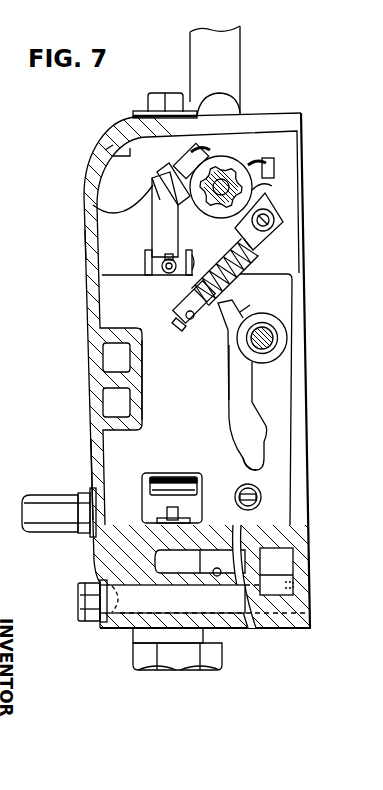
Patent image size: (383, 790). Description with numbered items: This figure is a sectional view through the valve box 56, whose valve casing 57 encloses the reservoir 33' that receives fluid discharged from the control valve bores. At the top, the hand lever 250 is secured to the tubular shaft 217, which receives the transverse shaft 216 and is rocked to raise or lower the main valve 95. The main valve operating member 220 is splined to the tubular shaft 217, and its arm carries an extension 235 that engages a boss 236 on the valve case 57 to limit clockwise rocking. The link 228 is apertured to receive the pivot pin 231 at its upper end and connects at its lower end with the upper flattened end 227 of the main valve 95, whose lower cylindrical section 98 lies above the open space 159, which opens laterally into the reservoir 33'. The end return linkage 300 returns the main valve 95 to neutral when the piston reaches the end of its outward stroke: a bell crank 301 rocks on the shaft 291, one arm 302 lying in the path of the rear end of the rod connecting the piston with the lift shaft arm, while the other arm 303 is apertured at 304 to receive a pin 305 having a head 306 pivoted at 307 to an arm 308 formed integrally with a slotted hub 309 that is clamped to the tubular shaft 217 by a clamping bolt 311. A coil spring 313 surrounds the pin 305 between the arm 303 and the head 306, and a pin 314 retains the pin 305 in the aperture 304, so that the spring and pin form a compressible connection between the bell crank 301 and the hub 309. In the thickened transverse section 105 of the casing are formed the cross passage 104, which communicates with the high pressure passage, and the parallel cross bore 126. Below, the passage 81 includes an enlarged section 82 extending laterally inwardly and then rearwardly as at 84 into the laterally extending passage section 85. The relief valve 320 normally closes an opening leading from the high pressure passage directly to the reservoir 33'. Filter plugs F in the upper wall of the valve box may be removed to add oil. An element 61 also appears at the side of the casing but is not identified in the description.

The hand lever 250 is at (242, 47).
The filter plug F is at (152, 100).
The boss 236 is at (112, 150).
The slotted hub 309 is at (190, 158).
The tubular shaft 217 is at (232, 167).
The transverse shaft 216 is at (218, 203).
The main valve operating member 220 is at (274, 168).
The arm 308 is at (255, 192).
The pivot 307 is at (276, 212).
The head 306 is at (282, 230).
The end return linkage 300 is at (270, 258).
The pivot pin 231 is at (158, 180).
The extension 235 is at (105, 206).
The link 228 is at (165, 230).
The clamping bolt 311 is at (184, 204).
The main valve 95 is at (143, 253).
The upper flattened end 227 is at (158, 268).
The valve box 56 is at (85, 300).
The aperture 304 is at (184, 299).
The coil spring 313 is at (232, 266).
The bell crank 301 is at (244, 312).
The pin 314 is at (183, 325).
The pin 305 is at (187, 331).
The arm 303 is at (227, 330).
The shaft 291 is at (268, 340).
The cross passage 104 is at (115, 357).
The thickened transverse section 105 is at (132, 378).
The cross bore 126 is at (115, 403).
The arm 302 is at (264, 434).
The sump extension 33' is at (220, 439).
The valve casing 57 is at (95, 453).
The lower cylindrical section 98 is at (169, 489).
The open space 159 is at (148, 500).
The relief valve 320 is at (235, 495).
The bolt 61 is at (40, 502).
The passage section 85 is at (155, 528).
The passage 81 is at (286, 556).
The enlarged section 82 is at (293, 586).
The passage section 84 is at (216, 577).